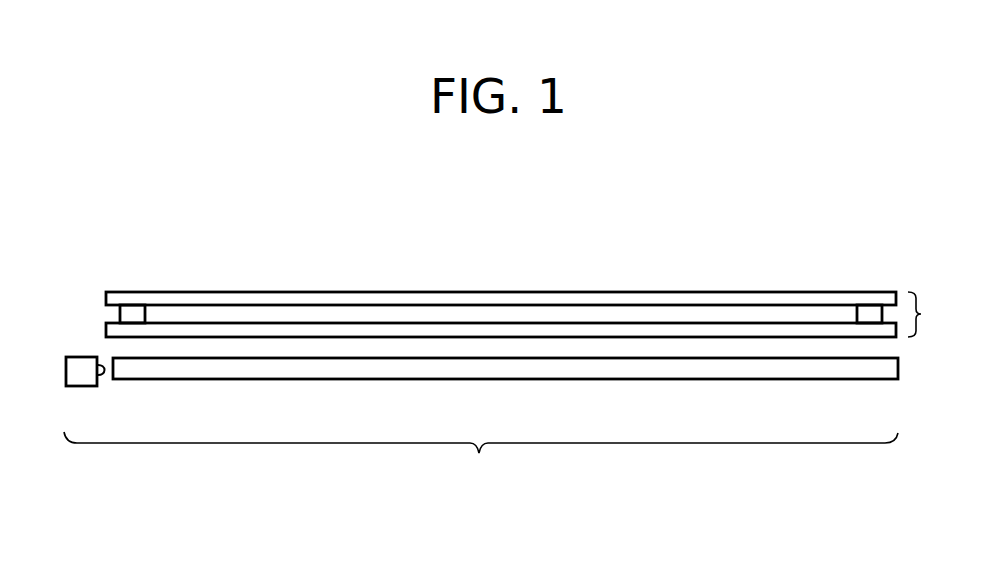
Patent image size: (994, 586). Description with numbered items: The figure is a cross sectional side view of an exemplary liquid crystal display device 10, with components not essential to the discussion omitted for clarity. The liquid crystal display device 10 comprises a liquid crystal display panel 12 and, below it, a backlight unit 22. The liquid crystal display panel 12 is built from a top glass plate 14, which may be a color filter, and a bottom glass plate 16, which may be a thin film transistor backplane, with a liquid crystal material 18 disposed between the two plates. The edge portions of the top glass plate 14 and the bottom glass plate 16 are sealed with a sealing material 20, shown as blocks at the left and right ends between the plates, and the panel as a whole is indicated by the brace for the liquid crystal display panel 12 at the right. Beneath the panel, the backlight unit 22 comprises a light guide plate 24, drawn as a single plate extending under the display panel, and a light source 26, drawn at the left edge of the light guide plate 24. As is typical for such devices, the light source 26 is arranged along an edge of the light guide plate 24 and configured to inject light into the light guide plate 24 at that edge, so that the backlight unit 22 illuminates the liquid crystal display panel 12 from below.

The liquid crystal display device 10 is at (539, 231).
The liquid crystal display panel 12 is at (928, 314).
The top glass plate 14 is at (377, 292).
The bottom glass plate 16 is at (233, 322).
The liquid crystal material 18 is at (623, 310).
The sealing material 20 is at (120, 313).
The backlight unit 22 is at (481, 462).
The light guide plate 24 is at (742, 380).
The light source 26 is at (83, 357).